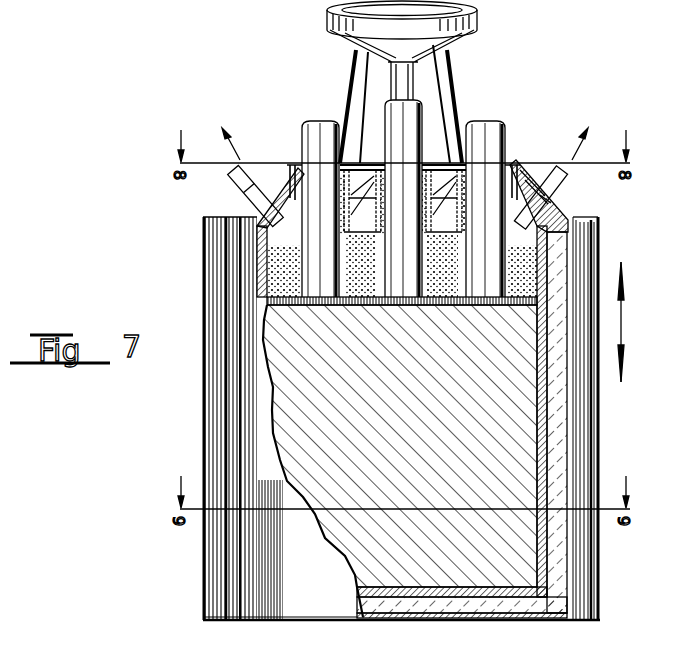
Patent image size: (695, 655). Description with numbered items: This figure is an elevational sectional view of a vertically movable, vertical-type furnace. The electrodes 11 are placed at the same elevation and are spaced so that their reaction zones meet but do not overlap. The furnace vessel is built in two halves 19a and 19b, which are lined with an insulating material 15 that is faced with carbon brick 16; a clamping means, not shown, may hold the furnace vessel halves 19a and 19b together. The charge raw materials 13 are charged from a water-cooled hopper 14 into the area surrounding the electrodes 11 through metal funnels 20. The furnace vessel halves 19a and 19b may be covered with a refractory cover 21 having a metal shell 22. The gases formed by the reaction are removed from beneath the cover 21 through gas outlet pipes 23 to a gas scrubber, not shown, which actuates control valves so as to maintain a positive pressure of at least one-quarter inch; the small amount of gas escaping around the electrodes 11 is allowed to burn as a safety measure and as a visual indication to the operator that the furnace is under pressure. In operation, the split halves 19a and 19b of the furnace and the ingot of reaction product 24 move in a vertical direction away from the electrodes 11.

The water-cooled hopper 14 is at (328, 17).
The electrodes 11 is at (302, 135).
The metal funnels 20 is at (296, 162).
The refractory cover 21 is at (525, 188).
The metal shell 22 is at (560, 213).
The charge raw materials 13 is at (287, 265).
The ingot of reaction product 24 is at (288, 392).
The carbon brick 16 is at (542, 407).
The insulating material 15 is at (557, 441).
The furnace vessel half 19a is at (573, 553).
The furnace vessel half 19b is at (298, 610).
The gas outlet pipes 23 is at (240, 187).